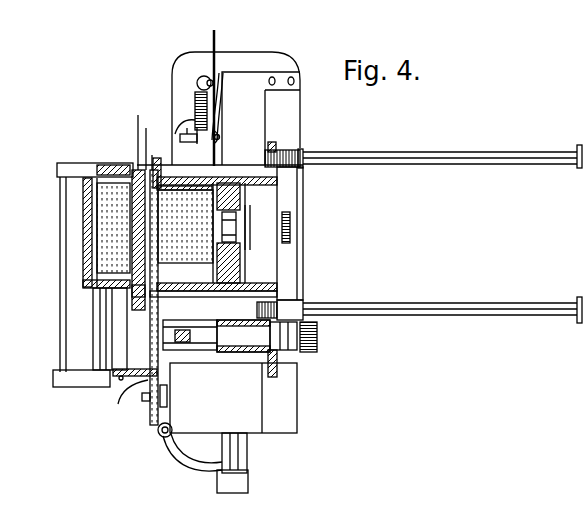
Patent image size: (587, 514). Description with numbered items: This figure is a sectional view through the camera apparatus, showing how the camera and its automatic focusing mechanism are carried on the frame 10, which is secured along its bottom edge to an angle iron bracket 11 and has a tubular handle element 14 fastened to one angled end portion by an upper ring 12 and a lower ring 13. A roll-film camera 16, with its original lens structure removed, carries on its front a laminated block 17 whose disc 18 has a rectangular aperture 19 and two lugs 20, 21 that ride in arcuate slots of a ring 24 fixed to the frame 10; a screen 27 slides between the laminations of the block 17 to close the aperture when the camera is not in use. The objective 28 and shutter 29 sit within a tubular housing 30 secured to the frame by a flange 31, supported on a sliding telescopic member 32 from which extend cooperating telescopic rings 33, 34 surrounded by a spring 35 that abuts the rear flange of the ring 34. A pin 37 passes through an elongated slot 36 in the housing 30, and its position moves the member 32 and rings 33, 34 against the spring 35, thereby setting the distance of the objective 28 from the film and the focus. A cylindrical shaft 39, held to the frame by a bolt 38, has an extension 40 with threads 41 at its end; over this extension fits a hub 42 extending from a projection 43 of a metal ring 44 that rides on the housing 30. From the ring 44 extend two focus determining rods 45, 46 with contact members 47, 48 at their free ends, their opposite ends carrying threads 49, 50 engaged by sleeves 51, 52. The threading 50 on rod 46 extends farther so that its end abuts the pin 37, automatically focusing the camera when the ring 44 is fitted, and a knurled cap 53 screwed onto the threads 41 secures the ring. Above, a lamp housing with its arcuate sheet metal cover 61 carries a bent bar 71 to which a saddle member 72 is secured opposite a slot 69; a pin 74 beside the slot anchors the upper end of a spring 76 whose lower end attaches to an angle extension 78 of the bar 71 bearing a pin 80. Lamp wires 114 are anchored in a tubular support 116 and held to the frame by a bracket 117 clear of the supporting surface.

The frame 10 is at (158, 416).
The angle iron bracket 11 is at (130, 387).
The upper ring 12 is at (57, 172).
The lower ring 13 is at (55, 379).
The tubular handle element 14 is at (65, 283).
The camera 16 is at (83, 233).
The laminated block of metal 17 is at (111, 329).
The disc 18 is at (130, 164).
The rectangular aperture 19 is at (146, 238).
The lug 20 is at (150, 218).
The lug 21 is at (142, 298).
The ring 24 is at (150, 142).
The screen 27 is at (137, 118).
The objective 28 is at (291, 221).
The shutter 29 is at (243, 268).
The tubular housing 30 is at (229, 285).
The flange 31 is at (165, 172).
The telescopic member 32 is at (282, 205).
The telescopic ring 33 is at (224, 171).
The telescopic ring 34 is at (186, 177).
The spring 35 is at (205, 284).
The elongated slot 36 is at (250, 280).
The pin 37 is at (245, 346).
The bolt 38 is at (144, 373).
The cylindrical shaft 39 is at (205, 346).
The shaft extension 40 is at (256, 352).
The threads 41 is at (286, 355).
The hub 42 is at (262, 377).
The projection 43 is at (280, 372).
The metal ring 44 is at (272, 142).
The focus determining rod 45 is at (476, 156).
The focus determining rod 46 is at (489, 313).
The contact member 47 is at (576, 166).
The contact member 48 is at (576, 322).
The threads 49 is at (290, 150).
The threads 50 is at (298, 306).
The sleeve 51 is at (303, 152).
The sleeve 52 is at (304, 302).
The knurled cap 53 is at (318, 339).
The sheet metal cover 61 is at (277, 52).
The slot 69 is at (220, 100).
The bent bar 71 is at (220, 138).
The saddle member 72 is at (213, 34).
The pin 74 is at (202, 77).
The spring 76 is at (195, 98).
The angle extension 78 is at (182, 115).
The pin 80 is at (185, 131).
The wires 114 is at (186, 466).
The tubular support 116 is at (248, 456).
The bracket 117 is at (159, 433).